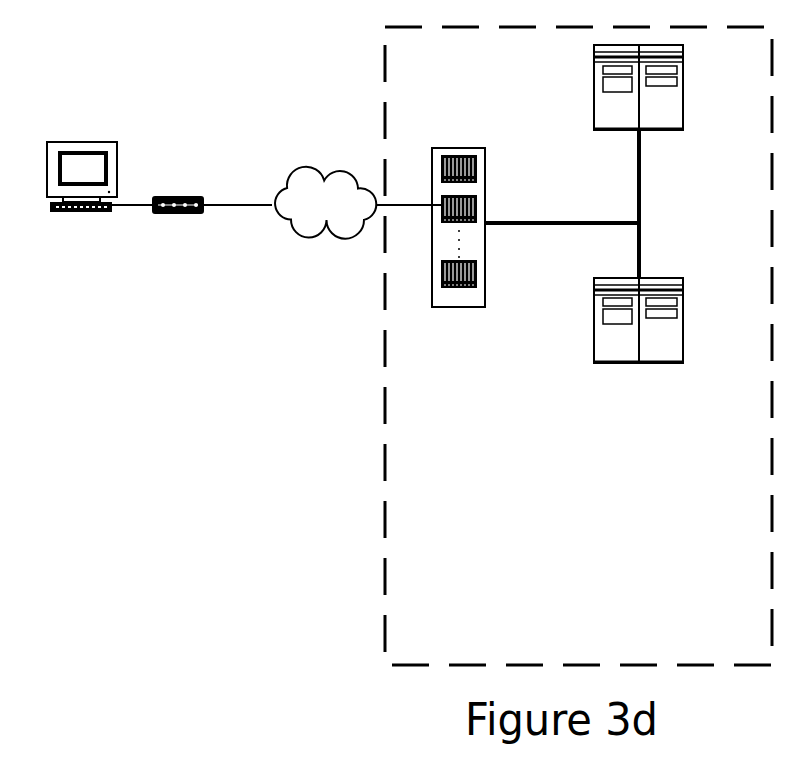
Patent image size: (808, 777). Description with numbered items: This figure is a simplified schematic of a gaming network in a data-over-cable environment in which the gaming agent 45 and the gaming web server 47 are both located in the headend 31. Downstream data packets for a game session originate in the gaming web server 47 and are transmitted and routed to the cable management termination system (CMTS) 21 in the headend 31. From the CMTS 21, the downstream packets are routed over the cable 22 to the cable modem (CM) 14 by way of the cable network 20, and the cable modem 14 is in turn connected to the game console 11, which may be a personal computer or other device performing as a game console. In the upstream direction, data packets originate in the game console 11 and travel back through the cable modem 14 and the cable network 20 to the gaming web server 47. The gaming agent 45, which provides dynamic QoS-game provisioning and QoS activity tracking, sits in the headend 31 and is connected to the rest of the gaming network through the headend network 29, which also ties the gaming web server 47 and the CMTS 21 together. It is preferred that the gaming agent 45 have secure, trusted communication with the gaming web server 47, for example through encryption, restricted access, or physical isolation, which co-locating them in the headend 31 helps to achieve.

The game console 11 is at (47, 177).
The cable modem 14 is at (175, 197).
The cable network 20 is at (298, 170).
The cable management termination system 21 is at (478, 197).
The cable 22 is at (459, 239).
The headend network 29 is at (641, 204).
The headend 31 is at (578, 346).
The gaming agent 45 is at (687, 80).
The gaming web server 47 is at (687, 314).